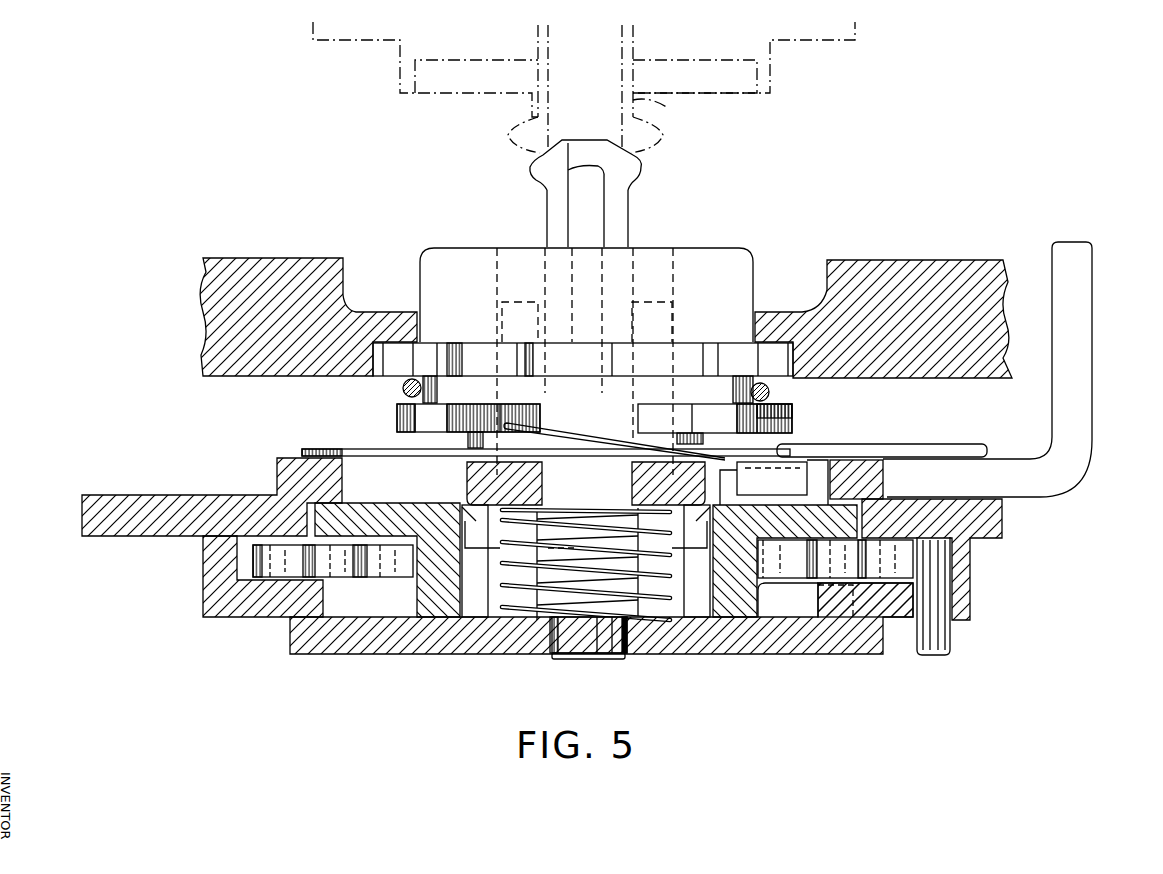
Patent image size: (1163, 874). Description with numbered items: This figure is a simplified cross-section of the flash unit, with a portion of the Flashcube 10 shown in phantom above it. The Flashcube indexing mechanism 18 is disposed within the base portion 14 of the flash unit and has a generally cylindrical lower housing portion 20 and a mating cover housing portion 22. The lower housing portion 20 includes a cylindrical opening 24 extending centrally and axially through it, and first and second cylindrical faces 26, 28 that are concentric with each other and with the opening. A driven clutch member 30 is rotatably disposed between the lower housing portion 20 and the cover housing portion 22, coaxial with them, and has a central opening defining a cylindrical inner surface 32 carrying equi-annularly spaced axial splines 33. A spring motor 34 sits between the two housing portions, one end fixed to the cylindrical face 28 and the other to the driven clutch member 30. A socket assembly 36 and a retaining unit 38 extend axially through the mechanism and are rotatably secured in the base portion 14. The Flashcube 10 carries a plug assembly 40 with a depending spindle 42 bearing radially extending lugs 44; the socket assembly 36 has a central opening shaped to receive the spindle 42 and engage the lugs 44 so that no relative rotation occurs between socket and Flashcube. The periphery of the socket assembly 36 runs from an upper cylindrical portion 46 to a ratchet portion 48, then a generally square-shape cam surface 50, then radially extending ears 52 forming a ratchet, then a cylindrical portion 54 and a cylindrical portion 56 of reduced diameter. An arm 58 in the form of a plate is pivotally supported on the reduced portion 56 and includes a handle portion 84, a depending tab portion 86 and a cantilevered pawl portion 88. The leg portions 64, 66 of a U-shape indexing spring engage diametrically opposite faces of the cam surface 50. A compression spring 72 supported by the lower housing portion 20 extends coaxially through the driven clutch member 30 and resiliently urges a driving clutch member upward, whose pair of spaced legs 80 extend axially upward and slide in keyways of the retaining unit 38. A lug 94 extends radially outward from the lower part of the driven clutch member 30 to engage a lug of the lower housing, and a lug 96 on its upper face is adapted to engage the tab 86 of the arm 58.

The Flashcube 10 is at (812, 54).
The base portion 14 is at (905, 260).
The Flashcube indexing mechanism 18 is at (878, 674).
The lower housing portion 20 is at (361, 652).
The cover housing portion 22 is at (205, 493).
The cylindrical opening 24 is at (609, 658).
The first cylindrical face 26 is at (325, 601).
The second cylindrical face 28 is at (243, 560).
The driven clutch member 30 is at (857, 510).
The cylindrical inner surface 32 is at (710, 600).
The splines 33 is at (478, 612).
The spring motor 34 is at (862, 542).
The socket assembly 36 is at (728, 242).
The retaining unit 38 is at (626, 211).
The plug assembly 40 is at (683, 127).
The depending spindle 42 is at (668, 108).
The lugs 44 is at (540, 153).
The upper cylindrical portion 46 is at (755, 285).
The ratchet portion 48 is at (798, 364).
The square-shape cam surface 50 is at (790, 412).
The ears 52 is at (406, 414).
The cylindrical portion 54 is at (468, 441).
The cylindrical portion of reduced diameter 56 is at (472, 475).
The arm 58 is at (893, 455).
The leg portion 64 is at (790, 371).
The leg portion 66 is at (402, 387).
The compression spring 72 is at (542, 607).
The legs 80 is at (518, 303).
The handle portion 84 is at (1090, 283).
The tab portion 86 is at (781, 489).
The pawl portion 88 is at (560, 431).
The lug 94 is at (793, 608).
The lug 96 is at (815, 480).